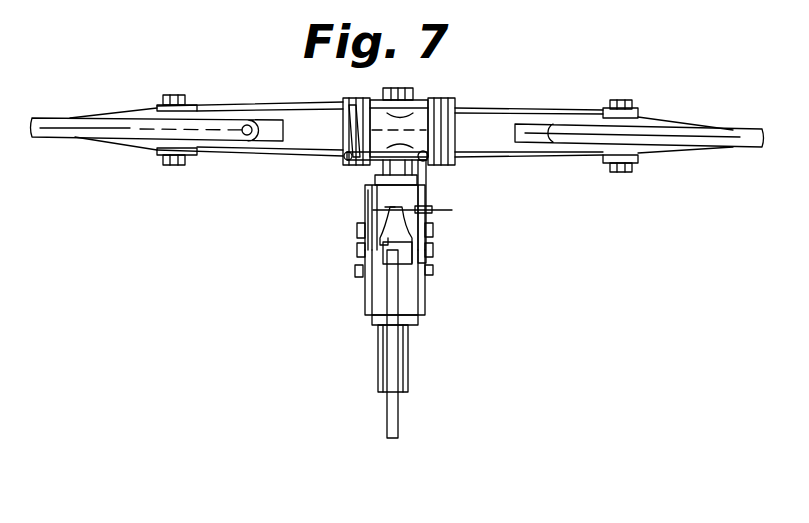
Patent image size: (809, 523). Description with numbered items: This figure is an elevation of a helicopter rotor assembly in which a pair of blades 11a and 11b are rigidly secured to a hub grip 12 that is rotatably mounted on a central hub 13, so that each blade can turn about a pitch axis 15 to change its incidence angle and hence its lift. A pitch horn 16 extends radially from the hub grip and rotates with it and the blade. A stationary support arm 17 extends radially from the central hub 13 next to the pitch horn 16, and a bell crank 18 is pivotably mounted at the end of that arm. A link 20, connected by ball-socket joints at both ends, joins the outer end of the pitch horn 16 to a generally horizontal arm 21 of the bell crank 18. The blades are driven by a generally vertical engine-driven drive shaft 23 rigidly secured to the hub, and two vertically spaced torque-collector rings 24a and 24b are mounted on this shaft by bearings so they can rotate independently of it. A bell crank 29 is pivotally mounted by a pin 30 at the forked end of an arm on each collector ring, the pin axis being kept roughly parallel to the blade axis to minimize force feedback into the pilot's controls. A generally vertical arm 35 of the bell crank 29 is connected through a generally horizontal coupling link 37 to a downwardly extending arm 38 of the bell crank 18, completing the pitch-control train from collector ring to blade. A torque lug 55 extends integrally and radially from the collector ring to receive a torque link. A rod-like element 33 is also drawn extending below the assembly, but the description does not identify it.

The blade 11a is at (80, 138).
The blade 11b is at (715, 148).
The hub grip 12 is at (250, 97).
The central hub 13 is at (417, 107).
The pitch axis 15 is at (477, 132).
The pitch horn 16 is at (340, 117).
The stationary support arm 17 is at (378, 106).
The bell crank 18 is at (428, 166).
The link 20 is at (343, 143).
The horizontal arm 21 is at (372, 165).
The drive shaft 23 is at (412, 367).
The torque-collector ring 24a is at (362, 197).
The torque-collector ring 24b is at (430, 298).
The bell crank 29 is at (360, 238).
The pin 30 is at (358, 250).
The actuating rod 33 is at (398, 423).
The vertical arm 35 is at (383, 218).
The coupling link 37 is at (435, 229).
The downwardly extending arm 38 is at (432, 178).
The torque lug 55 is at (355, 272).